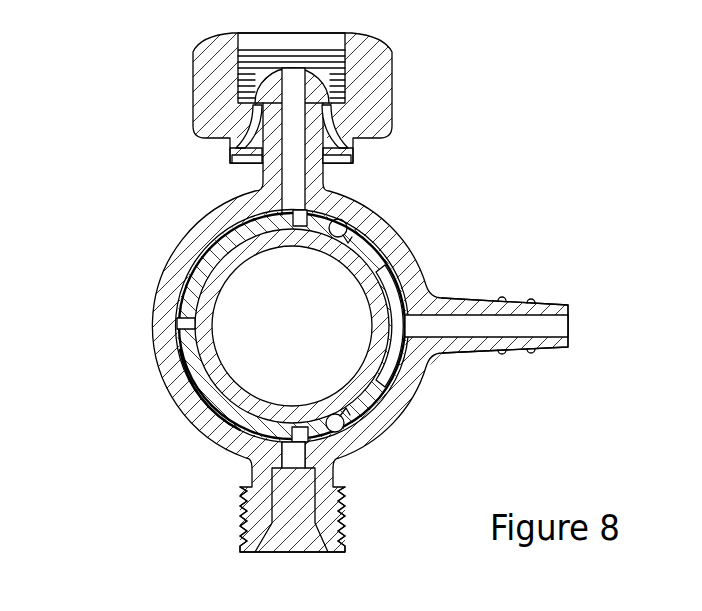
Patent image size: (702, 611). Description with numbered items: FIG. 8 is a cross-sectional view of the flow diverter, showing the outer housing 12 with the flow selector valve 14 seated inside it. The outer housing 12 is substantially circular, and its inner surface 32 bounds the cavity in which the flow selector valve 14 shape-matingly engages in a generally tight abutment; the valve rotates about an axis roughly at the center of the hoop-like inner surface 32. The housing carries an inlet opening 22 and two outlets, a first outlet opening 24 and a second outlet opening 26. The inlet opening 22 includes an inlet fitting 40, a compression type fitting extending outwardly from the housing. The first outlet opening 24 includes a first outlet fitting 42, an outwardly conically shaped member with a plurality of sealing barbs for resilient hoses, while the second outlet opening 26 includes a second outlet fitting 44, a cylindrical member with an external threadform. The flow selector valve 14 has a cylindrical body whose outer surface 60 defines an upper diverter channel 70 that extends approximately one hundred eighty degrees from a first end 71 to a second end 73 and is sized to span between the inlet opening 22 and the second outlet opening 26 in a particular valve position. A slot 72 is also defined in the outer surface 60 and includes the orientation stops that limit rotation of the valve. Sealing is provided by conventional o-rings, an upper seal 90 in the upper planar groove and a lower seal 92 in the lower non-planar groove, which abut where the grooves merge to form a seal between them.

The outer housing 12 is at (163, 253).
The flow selector valve 14 is at (240, 250).
The inlet opening 22 is at (308, 200).
The first outlet opening 24 is at (433, 326).
The second outlet opening 26 is at (298, 457).
The inner surface 32 is at (176, 315).
The inlet fitting 40 is at (403, 91).
The first outlet fitting 42 is at (520, 297).
The second outlet fitting 44 is at (237, 520).
The outer surface 60 is at (186, 307).
The upper diverter channel 70 is at (178, 342).
The first end 71 is at (287, 214).
The slot 72 is at (383, 270).
The second end 73 is at (290, 437).
The upper seal 90 is at (185, 373).
The lower seal 92 is at (346, 419).